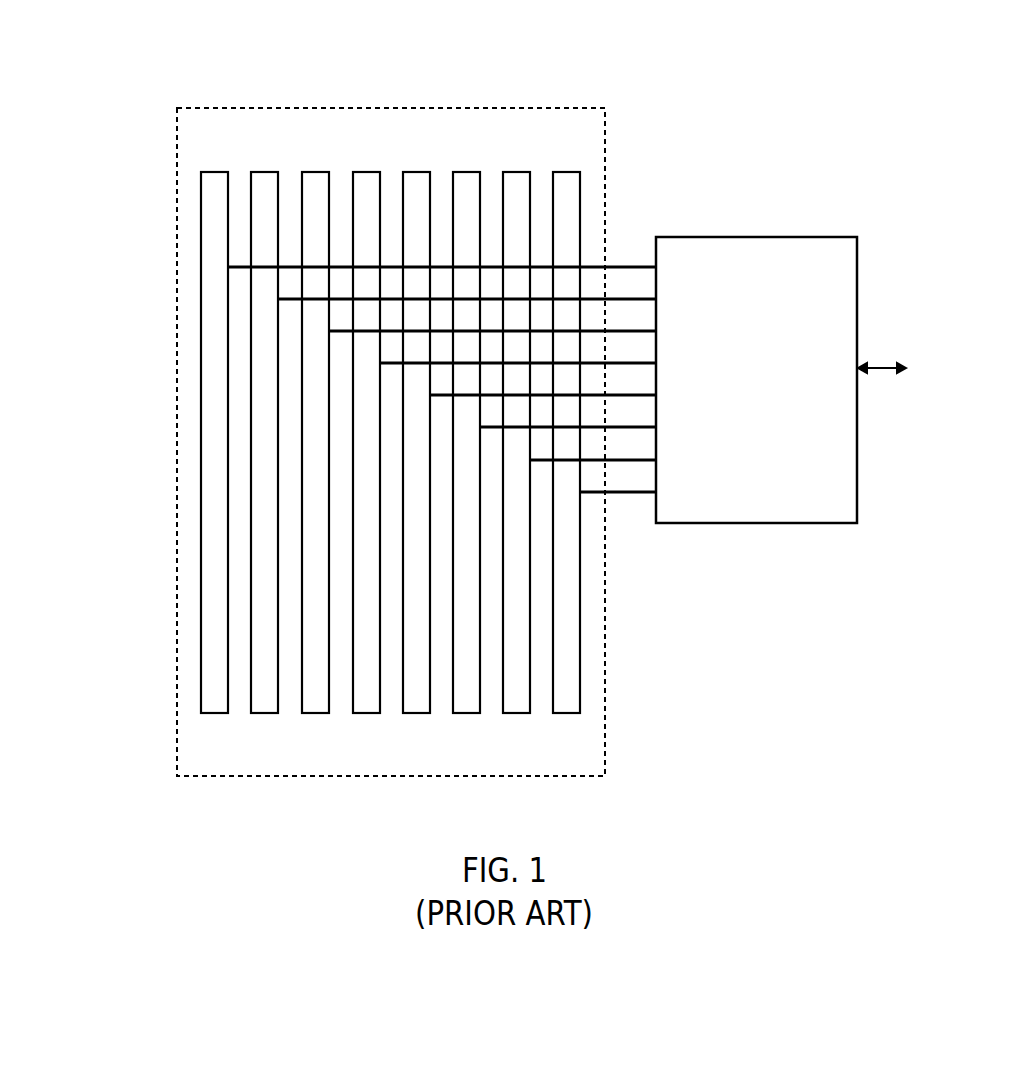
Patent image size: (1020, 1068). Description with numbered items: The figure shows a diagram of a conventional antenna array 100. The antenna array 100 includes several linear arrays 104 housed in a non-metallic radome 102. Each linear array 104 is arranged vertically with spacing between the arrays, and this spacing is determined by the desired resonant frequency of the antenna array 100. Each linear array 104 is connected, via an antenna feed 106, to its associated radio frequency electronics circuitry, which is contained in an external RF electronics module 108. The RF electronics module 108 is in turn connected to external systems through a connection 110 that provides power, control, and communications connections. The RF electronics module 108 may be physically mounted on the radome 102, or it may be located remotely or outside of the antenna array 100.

The antenna array 100 is at (100, 46).
The radome 102 is at (177, 124).
The linear array 104 is at (212, 282).
The antenna feed 106 is at (617, 265).
The RF electronics module 108 is at (797, 242).
The connection 110 is at (902, 371).